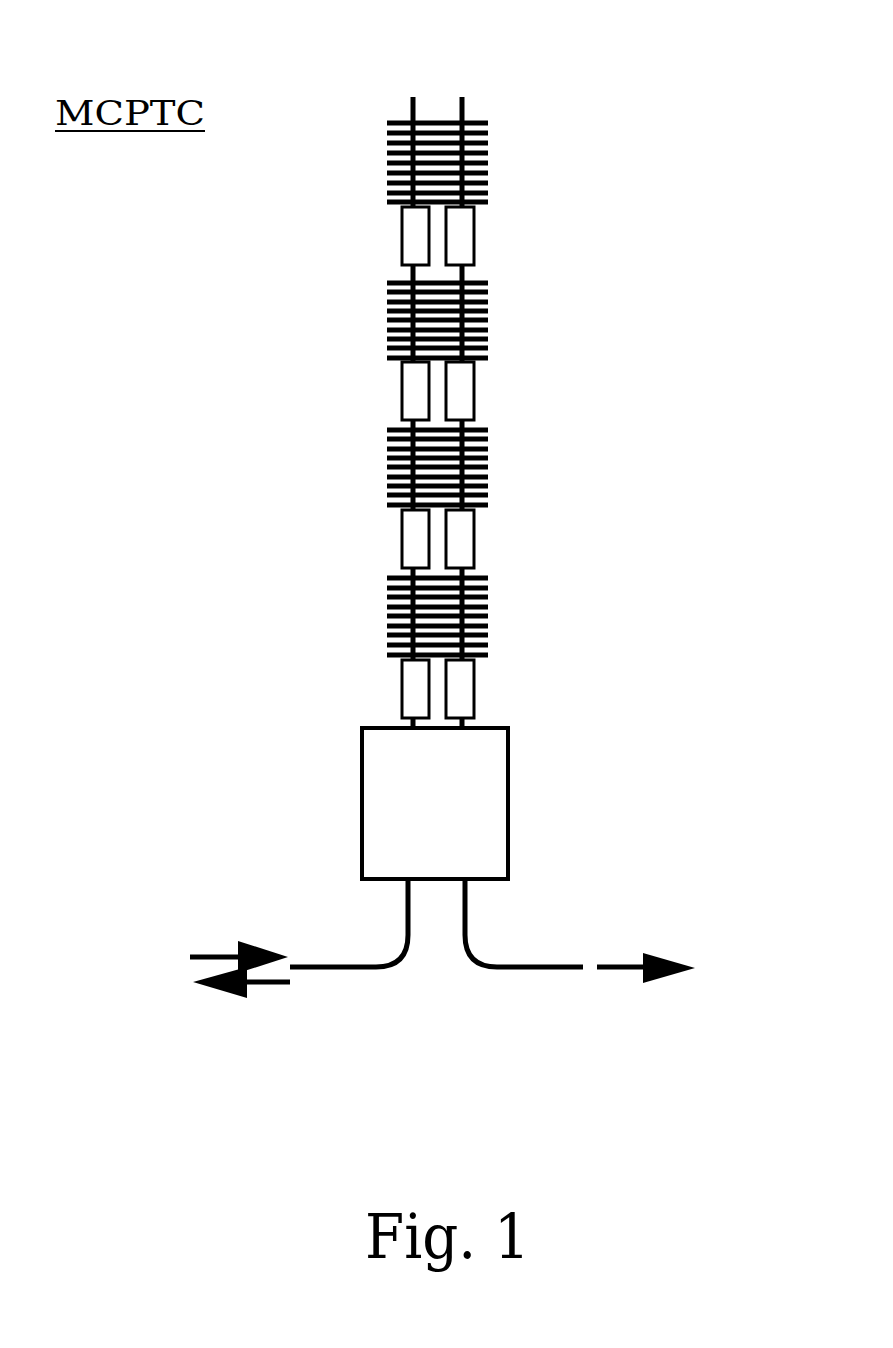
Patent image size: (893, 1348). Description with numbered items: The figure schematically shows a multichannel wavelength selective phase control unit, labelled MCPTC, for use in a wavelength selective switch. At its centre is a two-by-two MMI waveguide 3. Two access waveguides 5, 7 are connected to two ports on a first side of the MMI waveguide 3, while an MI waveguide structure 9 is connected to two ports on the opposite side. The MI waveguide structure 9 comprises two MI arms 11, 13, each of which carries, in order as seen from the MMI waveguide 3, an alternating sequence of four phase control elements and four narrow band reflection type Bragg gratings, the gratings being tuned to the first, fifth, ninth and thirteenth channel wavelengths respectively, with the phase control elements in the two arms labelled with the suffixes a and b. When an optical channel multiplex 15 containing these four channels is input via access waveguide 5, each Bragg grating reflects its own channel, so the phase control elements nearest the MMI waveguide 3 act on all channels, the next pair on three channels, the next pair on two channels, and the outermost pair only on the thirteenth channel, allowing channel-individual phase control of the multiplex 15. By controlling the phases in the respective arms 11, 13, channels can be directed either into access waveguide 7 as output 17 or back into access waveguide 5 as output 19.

The MMI waveguide 3 is at (508, 797).
The access waveguide 5 is at (343, 968).
The access waveguide 7 is at (483, 962).
The MI waveguide structure 9 is at (521, 364).
The MI arm 11 is at (437, 77).
The MI arm 13 is at (473, 364).
The optical channel multiplex 15 is at (212, 953).
The output 17 is at (612, 960).
The output 19 is at (217, 990).